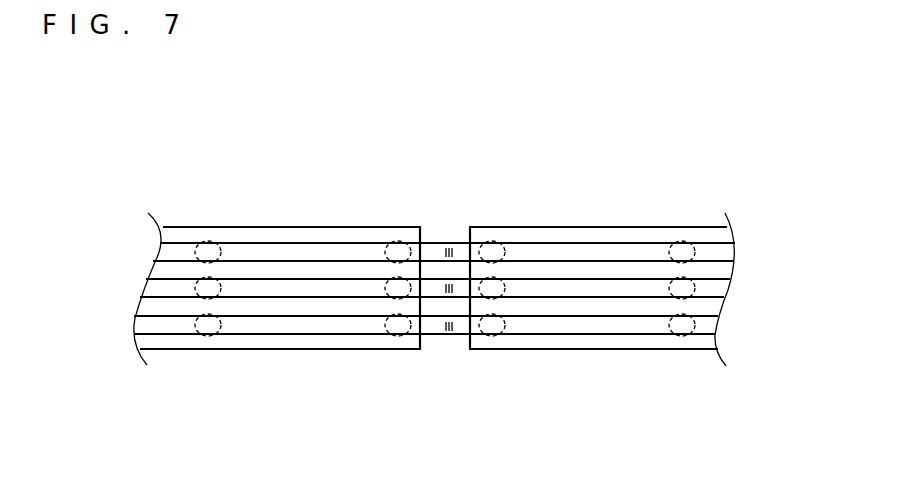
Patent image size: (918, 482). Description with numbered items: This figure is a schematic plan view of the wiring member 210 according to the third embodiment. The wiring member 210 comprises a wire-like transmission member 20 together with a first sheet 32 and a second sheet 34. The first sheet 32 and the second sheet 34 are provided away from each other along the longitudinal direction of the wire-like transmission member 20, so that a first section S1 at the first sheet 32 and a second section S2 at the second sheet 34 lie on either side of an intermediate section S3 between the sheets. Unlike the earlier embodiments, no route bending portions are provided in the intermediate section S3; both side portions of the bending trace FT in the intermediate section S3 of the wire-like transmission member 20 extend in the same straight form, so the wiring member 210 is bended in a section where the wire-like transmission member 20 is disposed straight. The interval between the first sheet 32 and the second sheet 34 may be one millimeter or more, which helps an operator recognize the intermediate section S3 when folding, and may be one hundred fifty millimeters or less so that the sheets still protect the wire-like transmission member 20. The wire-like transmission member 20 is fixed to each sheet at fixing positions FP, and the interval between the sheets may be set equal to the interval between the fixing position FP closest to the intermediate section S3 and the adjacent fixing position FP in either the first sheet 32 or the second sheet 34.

The wiring member 210 is at (250, 158).
The first sheet 32 is at (301, 227).
The second sheet 34 is at (607, 227).
The wire-like transmission member 20 is at (706, 325).
The first section S1 is at (272, 360).
The second section S2 is at (600, 360).
The intermediate section S3 is at (446, 228).
The fixing position FP is at (378, 338).
The bending trace FT is at (444, 255).